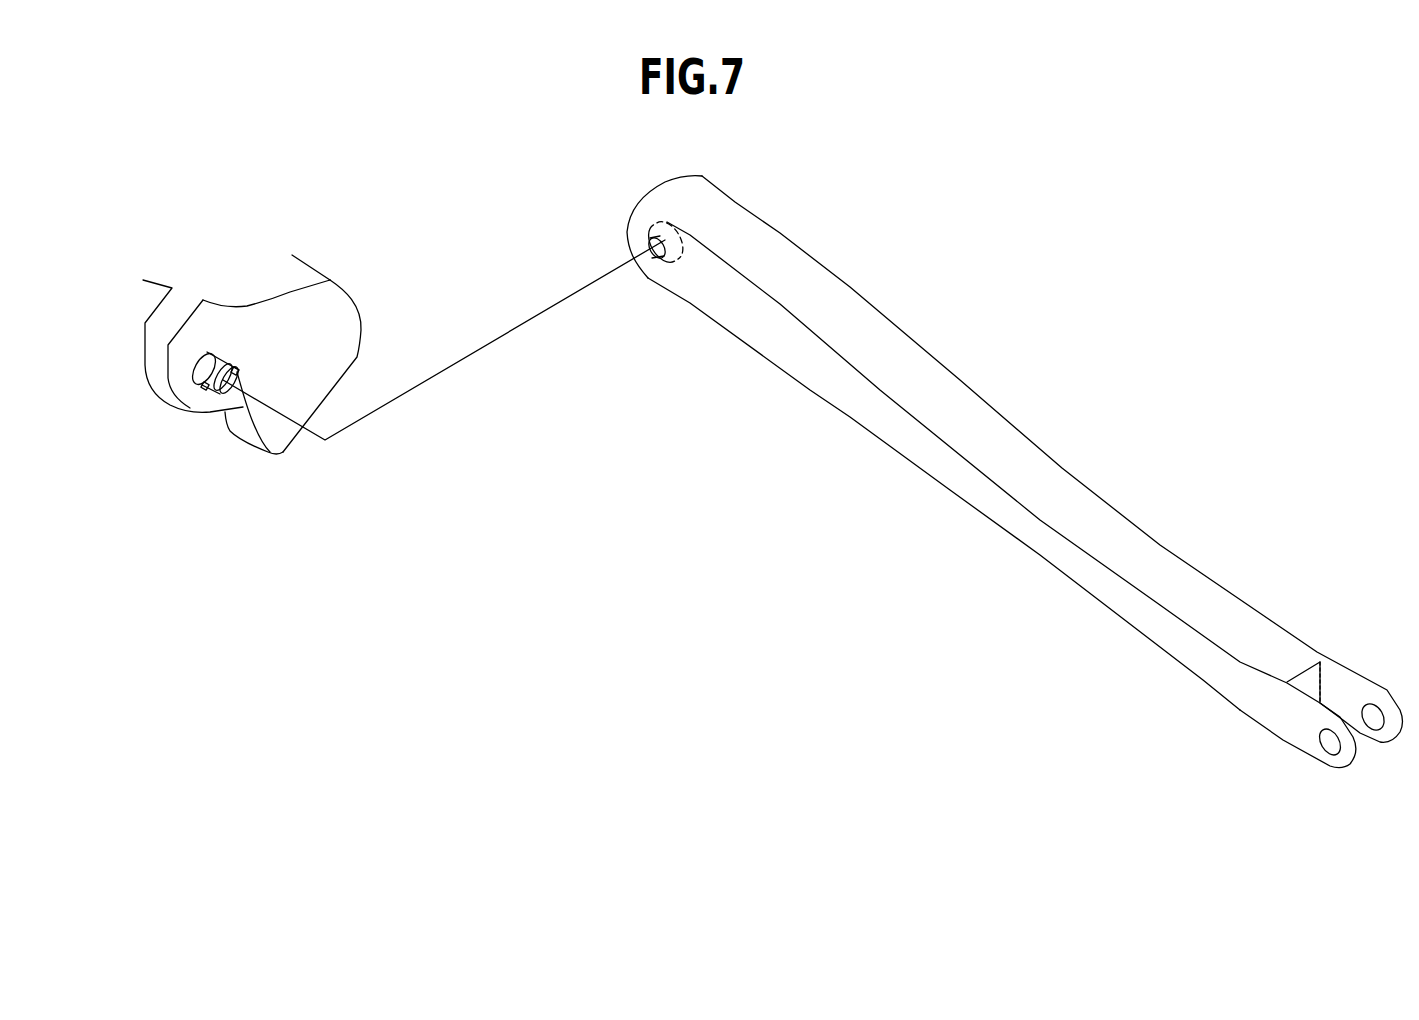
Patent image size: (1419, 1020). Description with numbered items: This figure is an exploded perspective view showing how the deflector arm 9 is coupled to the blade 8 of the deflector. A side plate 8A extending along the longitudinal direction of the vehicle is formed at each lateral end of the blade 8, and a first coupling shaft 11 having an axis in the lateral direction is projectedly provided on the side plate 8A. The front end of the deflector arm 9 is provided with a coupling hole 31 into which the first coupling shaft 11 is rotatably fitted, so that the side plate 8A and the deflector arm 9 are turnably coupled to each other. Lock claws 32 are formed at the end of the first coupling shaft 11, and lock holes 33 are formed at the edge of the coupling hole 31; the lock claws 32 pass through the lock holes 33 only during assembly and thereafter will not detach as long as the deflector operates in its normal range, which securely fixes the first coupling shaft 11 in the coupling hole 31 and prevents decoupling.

The blade 8 is at (303, 268).
The side plate 8A is at (327, 330).
The first coupling shaft 11 is at (207, 363).
The lock claws 32 is at (240, 406).
The deflector arm 9 is at (865, 340).
The coupling hole 31 is at (662, 225).
The lock holes 33 is at (646, 239).